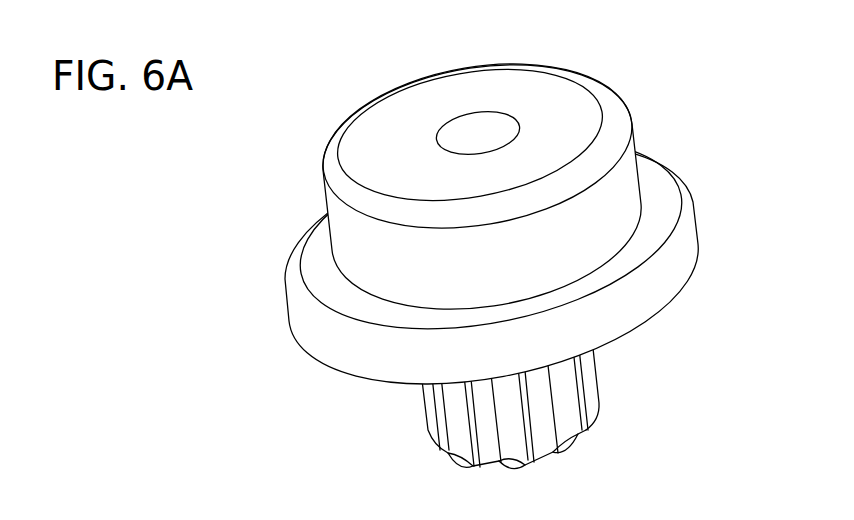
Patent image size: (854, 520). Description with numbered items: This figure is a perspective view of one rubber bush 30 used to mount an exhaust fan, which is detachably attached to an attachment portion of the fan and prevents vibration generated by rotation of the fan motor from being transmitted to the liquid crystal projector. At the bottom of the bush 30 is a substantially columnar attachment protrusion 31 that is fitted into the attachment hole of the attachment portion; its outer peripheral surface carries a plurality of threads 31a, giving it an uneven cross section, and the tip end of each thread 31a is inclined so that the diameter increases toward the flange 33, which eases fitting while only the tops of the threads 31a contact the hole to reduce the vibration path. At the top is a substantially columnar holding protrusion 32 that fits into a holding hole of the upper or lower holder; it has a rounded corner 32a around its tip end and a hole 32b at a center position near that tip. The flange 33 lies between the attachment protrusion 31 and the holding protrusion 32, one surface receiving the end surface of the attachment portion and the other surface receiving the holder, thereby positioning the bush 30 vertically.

The bush 30 is at (316, 97).
The attachment protrusion 31 is at (565, 388).
The thread 31a is at (512, 443).
The holding protrusion 32 is at (563, 104).
The rounded corner 32a is at (617, 108).
The hole 32b is at (477, 132).
The flange 33 is at (642, 297).